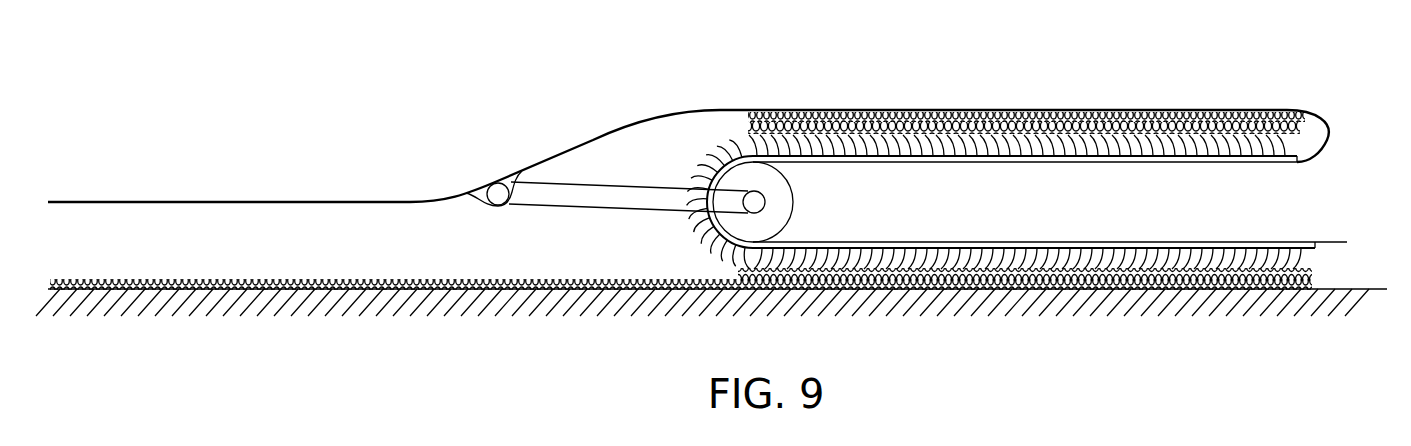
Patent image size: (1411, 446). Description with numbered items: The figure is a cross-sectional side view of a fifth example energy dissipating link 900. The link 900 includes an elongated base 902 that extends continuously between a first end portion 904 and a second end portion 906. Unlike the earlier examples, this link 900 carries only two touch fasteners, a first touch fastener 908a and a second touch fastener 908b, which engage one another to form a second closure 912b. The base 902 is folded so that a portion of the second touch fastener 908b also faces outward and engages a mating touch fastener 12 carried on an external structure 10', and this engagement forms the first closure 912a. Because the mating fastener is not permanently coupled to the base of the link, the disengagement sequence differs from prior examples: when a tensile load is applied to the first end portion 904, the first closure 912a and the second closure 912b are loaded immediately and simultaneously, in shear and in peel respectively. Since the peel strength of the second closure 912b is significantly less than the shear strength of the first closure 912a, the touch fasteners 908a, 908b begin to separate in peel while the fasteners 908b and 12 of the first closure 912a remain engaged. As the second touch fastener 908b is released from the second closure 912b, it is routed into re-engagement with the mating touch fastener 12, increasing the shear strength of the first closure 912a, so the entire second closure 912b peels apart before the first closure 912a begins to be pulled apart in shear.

The energy dissipating link 900 is at (324, 48).
The elongated base 902 is at (322, 190).
The first end portion 904 is at (150, 202).
The second end portion 906 is at (1330, 242).
The first touch fastener 908a is at (985, 117).
The second touch fastener 908b is at (1022, 163).
The first closure 912a is at (990, 303).
The second closure 912b is at (895, 100).
The mating touch fastener 12 is at (450, 279).
The external structure 10' is at (720, 271).